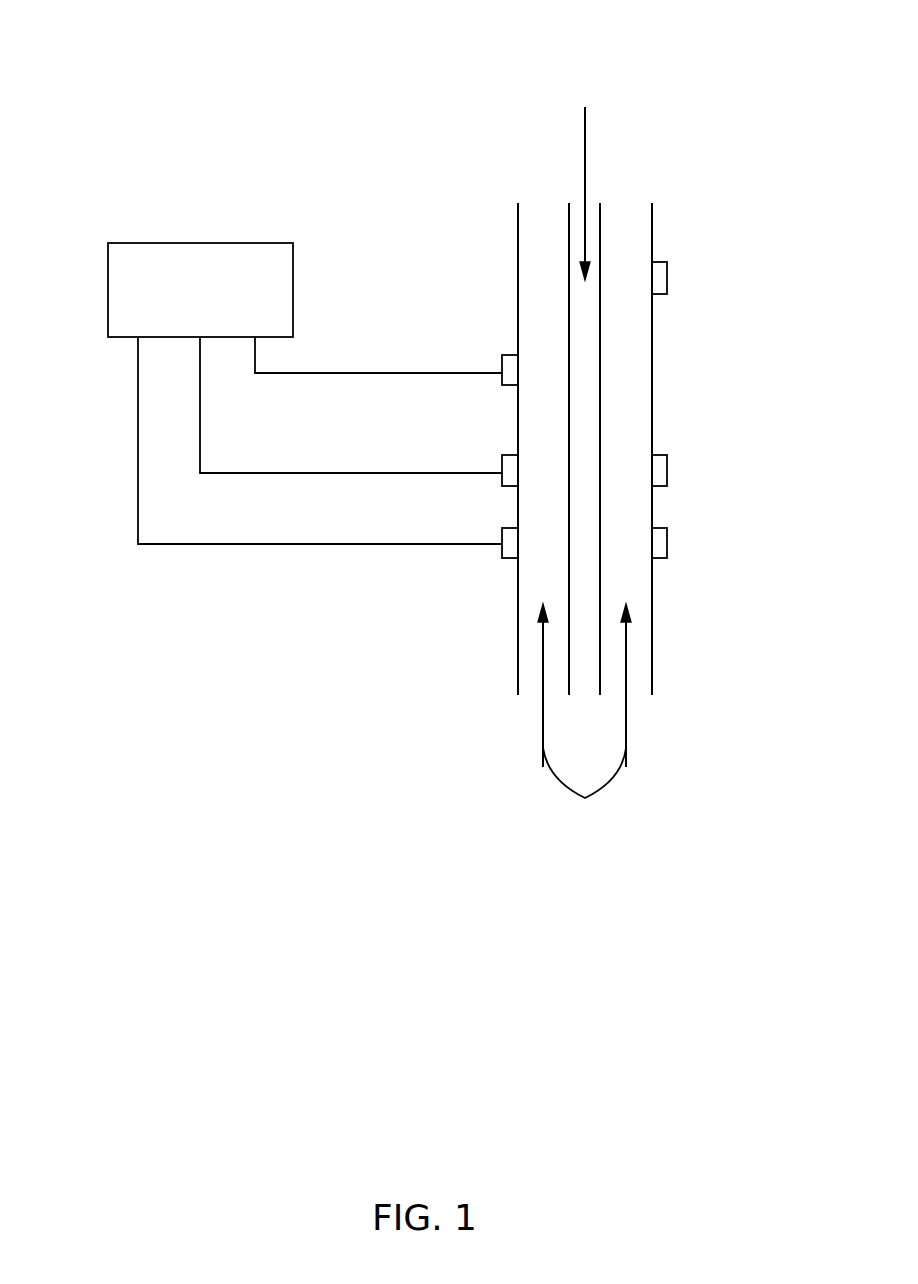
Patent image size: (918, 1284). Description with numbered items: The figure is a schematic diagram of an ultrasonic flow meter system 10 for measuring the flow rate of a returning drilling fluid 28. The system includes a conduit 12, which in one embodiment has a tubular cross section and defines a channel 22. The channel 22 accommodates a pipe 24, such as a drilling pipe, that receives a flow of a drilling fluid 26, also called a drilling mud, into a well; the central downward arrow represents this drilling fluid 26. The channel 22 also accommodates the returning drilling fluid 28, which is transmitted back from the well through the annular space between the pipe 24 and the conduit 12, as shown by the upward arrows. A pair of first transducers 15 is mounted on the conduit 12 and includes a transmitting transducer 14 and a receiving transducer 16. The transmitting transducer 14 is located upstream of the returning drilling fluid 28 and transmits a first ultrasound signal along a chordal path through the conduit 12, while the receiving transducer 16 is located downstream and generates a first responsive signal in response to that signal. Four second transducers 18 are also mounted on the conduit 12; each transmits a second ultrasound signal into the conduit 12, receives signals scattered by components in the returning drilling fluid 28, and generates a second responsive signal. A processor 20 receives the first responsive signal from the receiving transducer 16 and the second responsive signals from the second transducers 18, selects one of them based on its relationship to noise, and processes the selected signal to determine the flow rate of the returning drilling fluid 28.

The ultrasonic flow meter system 10 is at (232, 53).
The conduit 12 is at (652, 236).
The transmitting transducer 14 is at (502, 365).
The pair of first transducers 15 is at (719, 288).
The receiving transducer 16 is at (672, 288).
The second transducers 18 is at (502, 467).
The processor 20 is at (108, 303).
The channel 22 is at (560, 242).
The pipe 24 is at (602, 223).
The drilling fluid 26 is at (583, 177).
The returning drilling fluid 28 is at (584, 719).